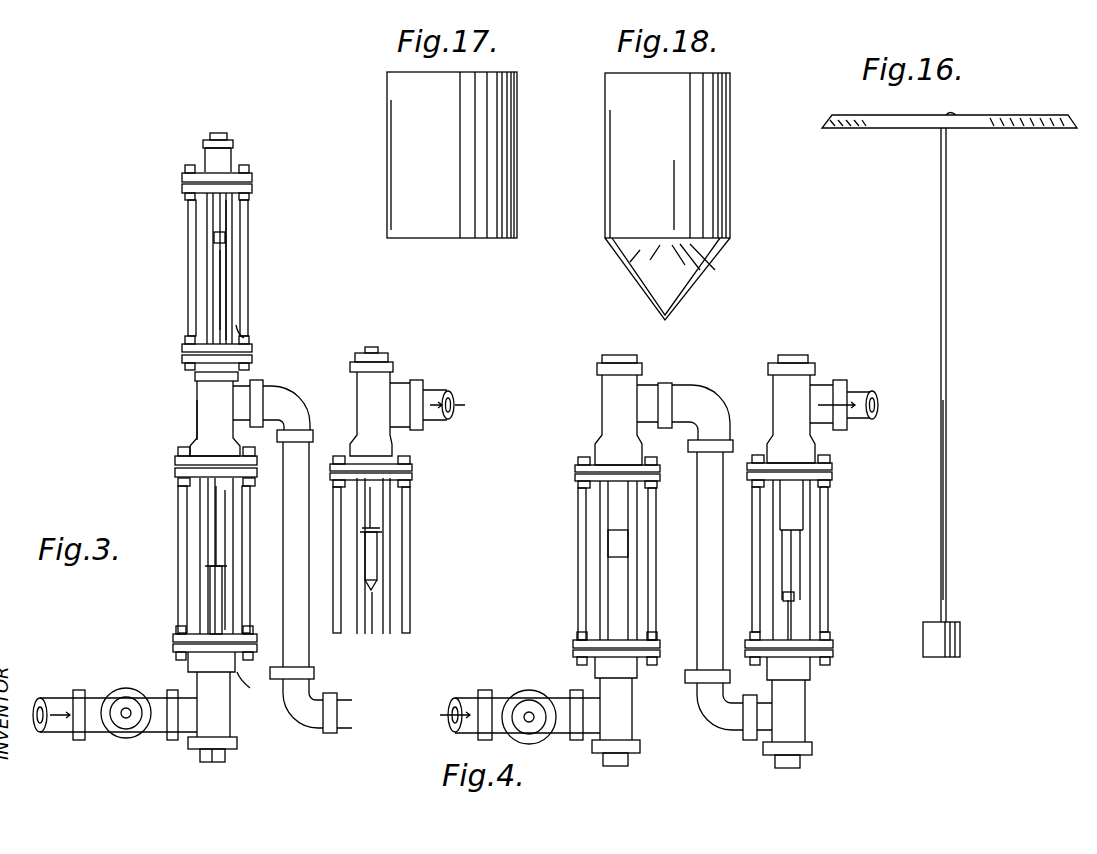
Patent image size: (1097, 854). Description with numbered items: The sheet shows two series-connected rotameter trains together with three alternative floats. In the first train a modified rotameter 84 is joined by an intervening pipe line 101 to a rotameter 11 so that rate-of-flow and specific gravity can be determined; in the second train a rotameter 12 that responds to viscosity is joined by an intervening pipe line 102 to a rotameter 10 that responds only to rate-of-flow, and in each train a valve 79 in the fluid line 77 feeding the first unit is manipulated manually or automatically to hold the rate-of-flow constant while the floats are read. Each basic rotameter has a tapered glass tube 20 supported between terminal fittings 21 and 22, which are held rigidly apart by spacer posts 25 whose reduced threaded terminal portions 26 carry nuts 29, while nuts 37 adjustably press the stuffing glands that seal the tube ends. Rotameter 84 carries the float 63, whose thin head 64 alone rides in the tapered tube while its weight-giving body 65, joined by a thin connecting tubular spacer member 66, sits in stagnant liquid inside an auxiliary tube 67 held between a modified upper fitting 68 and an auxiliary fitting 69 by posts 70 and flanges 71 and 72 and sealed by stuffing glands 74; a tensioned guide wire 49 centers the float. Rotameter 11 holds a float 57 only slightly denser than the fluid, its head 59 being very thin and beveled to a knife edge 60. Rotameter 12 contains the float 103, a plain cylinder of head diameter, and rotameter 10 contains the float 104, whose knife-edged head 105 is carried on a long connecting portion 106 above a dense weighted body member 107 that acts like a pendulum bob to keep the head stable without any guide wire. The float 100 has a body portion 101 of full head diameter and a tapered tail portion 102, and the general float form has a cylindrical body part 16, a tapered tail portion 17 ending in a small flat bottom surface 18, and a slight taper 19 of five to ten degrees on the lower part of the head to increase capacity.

In FIG. 4, the rotameter 10 is at (833, 498).
In FIG. 3, the rotameter 11 is at (440, 581).
In FIG. 4, the rotameter 12 is at (578, 552).
In FIG. 3, the body part 16 is at (378, 554).
In FIG. 3, the tail portion 17 is at (362, 565).
In FIG. 3, the flat bottom surface 18 is at (366, 568).
In FIG. 3, the taper 19 is at (357, 536).
In FIG. 3, the tapered glass tube 20 is at (230, 574).
In FIG. 4, the tapered glass tube 20 is at (637, 505).
In FIG. 3, the terminal fitting 21 is at (193, 760).
In FIG. 4, the terminal fitting 21 is at (620, 724).
In FIG. 3, the terminal fitting 22 is at (388, 409).
In FIG. 4, the terminal fitting 22 is at (633, 409).
In FIG. 3, the spacer posts 25 is at (180, 540).
In FIG. 4, the spacer posts 25 is at (650, 600).
In FIG. 3, the reduced threaded terminal portions 26 is at (182, 655).
In FIG. 3, the nuts 29 is at (252, 642).
In FIG. 3, the nuts 37 is at (176, 622).
In FIG. 4, the nuts 37 is at (577, 638).
In FIG. 3, the guide wire 49 is at (218, 213).
In FIG. 3, the float 57 is at (380, 556).
In FIG. 3, the head portion 59 is at (380, 530).
In FIG. 3, the knife edge 60 is at (382, 536).
In FIG. 3, the float 63 is at (212, 495).
In FIG. 3, the head 64 is at (205, 556).
In FIG. 3, the weight-giving body 65 is at (216, 238).
In FIG. 3, the connecting tubular spacer member 66 is at (225, 302).
In FIG. 3, the auxiliary tube 67 is at (218, 276).
In FIG. 3, the modified upper fitting 68 is at (197, 396).
In FIG. 3, the auxiliary fitting 69 is at (207, 152).
In FIG. 3, the posts 70 is at (246, 244).
In FIG. 3, the flange 71 is at (184, 355).
In FIG. 3, the flange 72 is at (185, 180).
In FIG. 3, the stuffing glands 74 is at (232, 342).
In FIG. 3, the inlet pipe 77 is at (62, 692).
In FIG. 4, the inlet pipe 77 is at (462, 692).
In FIG. 3, the valve 79 is at (122, 688).
In FIG. 4, the valve 79 is at (528, 690).
In FIG. 3, the modified rotameter construction 84 is at (190, 422).
In FIG. 18, the float 100 is at (597, 203).
In FIG. 3, the body portion 101 is at (283, 574).
In FIG. 18, the body portion 101 is at (730, 212).
In FIG. 4, the tapered tail portion 102 is at (725, 618).
In FIG. 18, the tapered tail portion 102 is at (700, 282).
In FIG. 4, the float 103 is at (628, 538).
In FIG. 17, the float 103 is at (387, 155).
In FIG. 4, the float 104 is at (806, 576).
In FIG. 16, the float 104 is at (955, 528).
In FIG. 4, the head 105 is at (803, 520).
In FIG. 16, the head 105 is at (1005, 118).
In FIG. 4, the connecting portion 106 is at (795, 550).
In FIG. 16, the connecting portion 106 is at (948, 210).
In FIG. 4, the weighted body member 107 is at (794, 597).
In FIG. 16, the weighted body member 107 is at (960, 638).